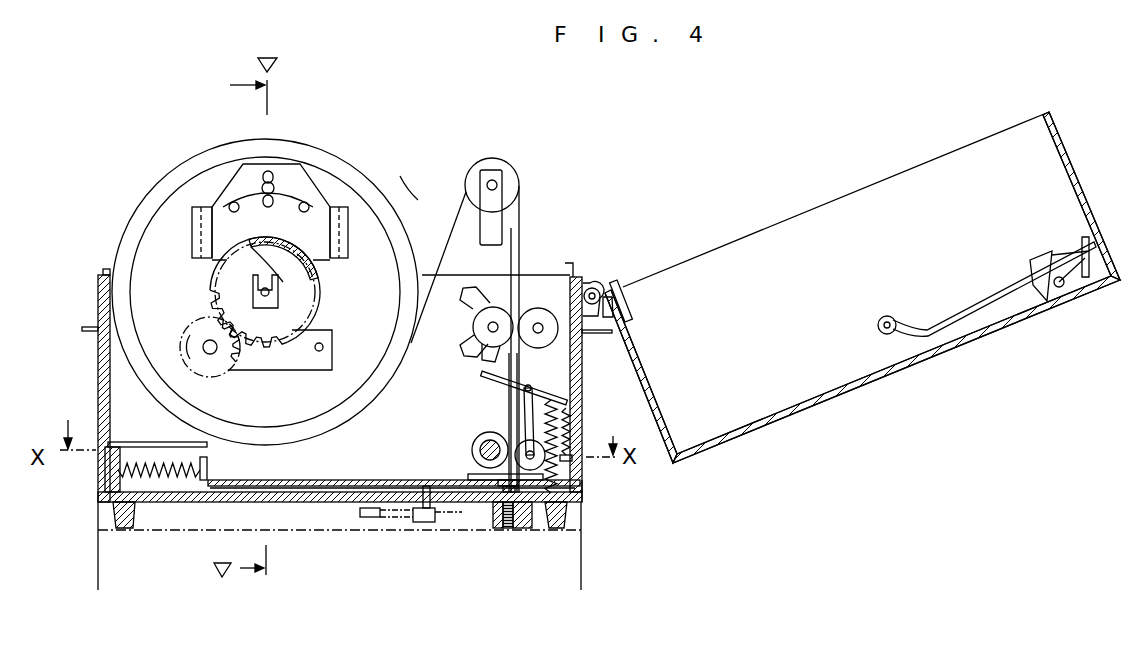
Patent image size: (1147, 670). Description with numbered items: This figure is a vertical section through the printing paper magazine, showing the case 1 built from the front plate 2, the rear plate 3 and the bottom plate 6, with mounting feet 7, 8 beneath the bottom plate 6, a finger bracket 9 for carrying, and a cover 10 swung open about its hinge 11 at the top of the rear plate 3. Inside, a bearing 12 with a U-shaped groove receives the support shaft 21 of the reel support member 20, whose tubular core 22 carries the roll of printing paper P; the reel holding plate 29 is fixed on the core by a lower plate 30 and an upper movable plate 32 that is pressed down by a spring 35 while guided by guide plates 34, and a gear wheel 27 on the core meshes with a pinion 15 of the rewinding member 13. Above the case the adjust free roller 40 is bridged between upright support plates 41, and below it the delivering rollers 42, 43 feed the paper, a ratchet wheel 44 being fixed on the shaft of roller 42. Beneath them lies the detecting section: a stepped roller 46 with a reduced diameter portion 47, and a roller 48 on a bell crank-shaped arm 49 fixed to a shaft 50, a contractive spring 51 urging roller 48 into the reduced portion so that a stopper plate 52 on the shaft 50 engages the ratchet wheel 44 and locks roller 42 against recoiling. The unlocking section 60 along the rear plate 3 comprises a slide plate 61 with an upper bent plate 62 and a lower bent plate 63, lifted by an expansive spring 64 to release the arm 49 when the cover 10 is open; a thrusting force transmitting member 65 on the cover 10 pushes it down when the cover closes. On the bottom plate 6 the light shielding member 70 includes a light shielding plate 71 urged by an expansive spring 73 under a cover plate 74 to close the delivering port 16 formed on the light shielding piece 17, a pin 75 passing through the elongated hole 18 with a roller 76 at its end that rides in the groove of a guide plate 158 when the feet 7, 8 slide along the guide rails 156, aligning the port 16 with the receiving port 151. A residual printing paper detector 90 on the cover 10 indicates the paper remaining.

The case 1 is at (590, 498).
The front plate 2 is at (98, 347).
The rear plate 3 is at (583, 384).
The bottom plate 6 is at (310, 502).
The mounting foot 7 is at (122, 529).
The mounting foot 8 is at (560, 530).
The finger bracket 9 is at (94, 326).
The cover 10 is at (767, 432).
The hinge 11 is at (594, 288).
The bearing 12 is at (245, 287).
The rewinding member 13 is at (178, 333).
The pinion 15 is at (222, 358).
The printing paper delivering port 16 is at (506, 529).
The light shielding piece 17 is at (494, 528).
The elongated hole 18 is at (390, 490).
The reel support member 20 is at (155, 182).
The support shaft 21 is at (280, 298).
The tubular core 22 is at (320, 276).
The gear wheel 27 is at (282, 340).
The reel holding plate 29 is at (117, 263).
The plate 30 is at (262, 371).
The movable plate 32 is at (300, 170).
The guide plate 34 is at (192, 241).
The spring 35 is at (310, 198).
The adjust free roller 40 is at (512, 178).
The support plate 41 is at (502, 222).
The roller 42 is at (495, 325).
The roller 43 is at (538, 325).
The ratchet wheel 44 is at (465, 348).
The stepped roller 46 is at (514, 450).
The reduced diameter portion 47 is at (472, 450).
The roller 48 is at (518, 445).
The bell crank-shaped arm 49 is at (534, 380).
The shaft 50 is at (519, 382).
The contractive spring 51 is at (585, 487).
The stopper plate 52 is at (485, 376).
The unlocking section 60 is at (586, 278).
The slide plate 61 is at (605, 280).
The bent plate 62 is at (569, 262).
The bent plate 63 is at (560, 411).
The expansive spring 64 is at (572, 429).
The thrusting force transmitting member 65 is at (632, 304).
The light shielding member 70 is at (303, 479).
The light shielding plate 71 is at (340, 487).
The expansive spring 73 is at (168, 478).
The cover plate 74 is at (152, 441).
The pin 75 is at (420, 523).
The roller 76 is at (428, 523).
The residual printing paper detector 90 is at (993, 298).
The printing paper receiving port 151 is at (515, 529).
The guide rail 156 is at (97, 526).
The guide plate 158 is at (367, 518).
The printing paper P is at (457, 321).